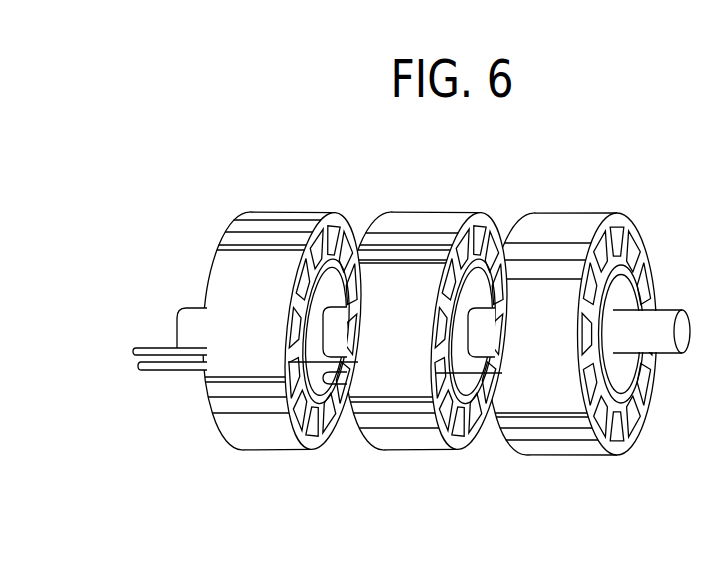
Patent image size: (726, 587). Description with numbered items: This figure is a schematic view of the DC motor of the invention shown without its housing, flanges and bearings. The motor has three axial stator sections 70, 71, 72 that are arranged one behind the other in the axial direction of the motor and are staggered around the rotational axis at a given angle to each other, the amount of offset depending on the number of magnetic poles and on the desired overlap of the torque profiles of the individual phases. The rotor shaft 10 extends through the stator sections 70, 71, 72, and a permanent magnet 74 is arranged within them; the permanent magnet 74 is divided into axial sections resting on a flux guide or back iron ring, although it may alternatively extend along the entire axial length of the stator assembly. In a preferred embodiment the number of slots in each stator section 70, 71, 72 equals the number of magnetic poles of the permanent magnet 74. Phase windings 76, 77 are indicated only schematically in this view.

The rotor shaft 10 is at (663, 344).
The axial stator section 70 is at (298, 206).
The axial stator section 71 is at (449, 206).
The axial stator section 72 is at (592, 206).
The permanent magnet 74 is at (622, 297).
The phase winding 76 is at (158, 371).
The phase winding 77 is at (140, 346).